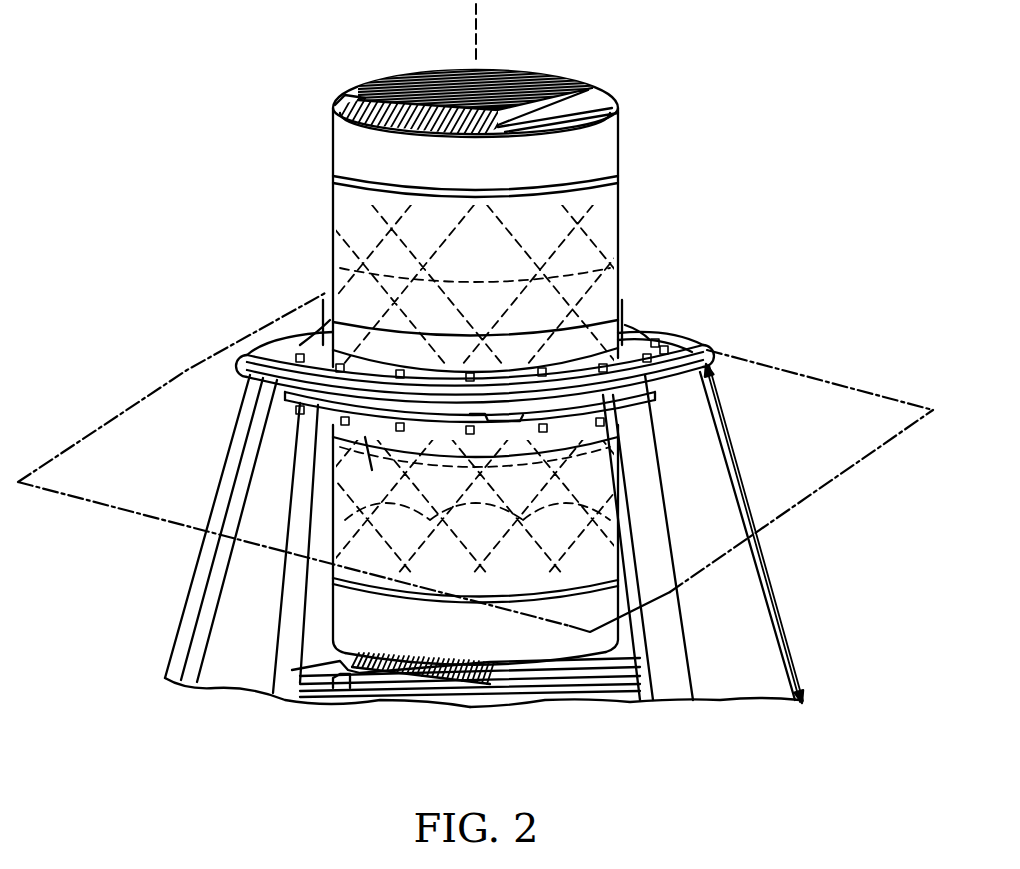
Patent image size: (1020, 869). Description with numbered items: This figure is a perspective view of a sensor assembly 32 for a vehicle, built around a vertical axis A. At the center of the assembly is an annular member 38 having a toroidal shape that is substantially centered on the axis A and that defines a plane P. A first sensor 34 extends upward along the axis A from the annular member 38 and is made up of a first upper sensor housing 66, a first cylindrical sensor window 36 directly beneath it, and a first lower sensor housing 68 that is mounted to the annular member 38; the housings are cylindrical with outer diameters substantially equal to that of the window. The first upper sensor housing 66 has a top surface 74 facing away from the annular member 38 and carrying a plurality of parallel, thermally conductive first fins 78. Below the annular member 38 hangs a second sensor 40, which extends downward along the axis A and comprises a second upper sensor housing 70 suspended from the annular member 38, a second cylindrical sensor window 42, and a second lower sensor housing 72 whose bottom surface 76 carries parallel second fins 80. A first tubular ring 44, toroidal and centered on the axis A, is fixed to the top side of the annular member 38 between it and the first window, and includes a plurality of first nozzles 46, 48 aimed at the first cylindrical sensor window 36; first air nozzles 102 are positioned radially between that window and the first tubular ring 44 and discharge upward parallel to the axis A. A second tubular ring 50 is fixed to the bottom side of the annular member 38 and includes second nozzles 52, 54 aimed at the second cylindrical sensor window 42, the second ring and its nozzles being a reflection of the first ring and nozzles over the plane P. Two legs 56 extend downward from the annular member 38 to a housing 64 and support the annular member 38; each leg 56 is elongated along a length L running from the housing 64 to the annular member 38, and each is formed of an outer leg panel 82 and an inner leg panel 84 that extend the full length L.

The sensor assembly 32 is at (693, 115).
The first sensor 34 is at (628, 133).
The first cylindrical sensor window 36 is at (622, 190).
The annular member 38 is at (692, 338).
The second sensor 40 is at (325, 608).
The second cylindrical sensor window 42 is at (598, 487).
The first tubular ring 44 is at (325, 340).
The first nozzle 46 is at (315, 345).
The first nozzle 48 is at (340, 368).
The second tubular ring 50 is at (283, 388).
The second nozzle 52 is at (313, 415).
The second nozzle 54 is at (333, 422).
The leg 56 is at (220, 636).
The housing 64 is at (620, 677).
The first upper sensor housing 66 is at (350, 142).
The first lower sensor housing 68 is at (370, 335).
The second upper sensor housing 70 is at (368, 437).
The second lower sensor housing 72 is at (297, 683).
The top surface 74 is at (575, 118).
The bottom surface 76 is at (557, 667).
The first fins 78 is at (415, 82).
The second fins 80 is at (457, 680).
The outer leg panel 82 is at (725, 670).
The inner leg panel 84 is at (203, 678).
The first air nozzles 102 is at (622, 340).
The axis A is at (478, 28).
The length L is at (732, 428).
The plane P is at (835, 388).